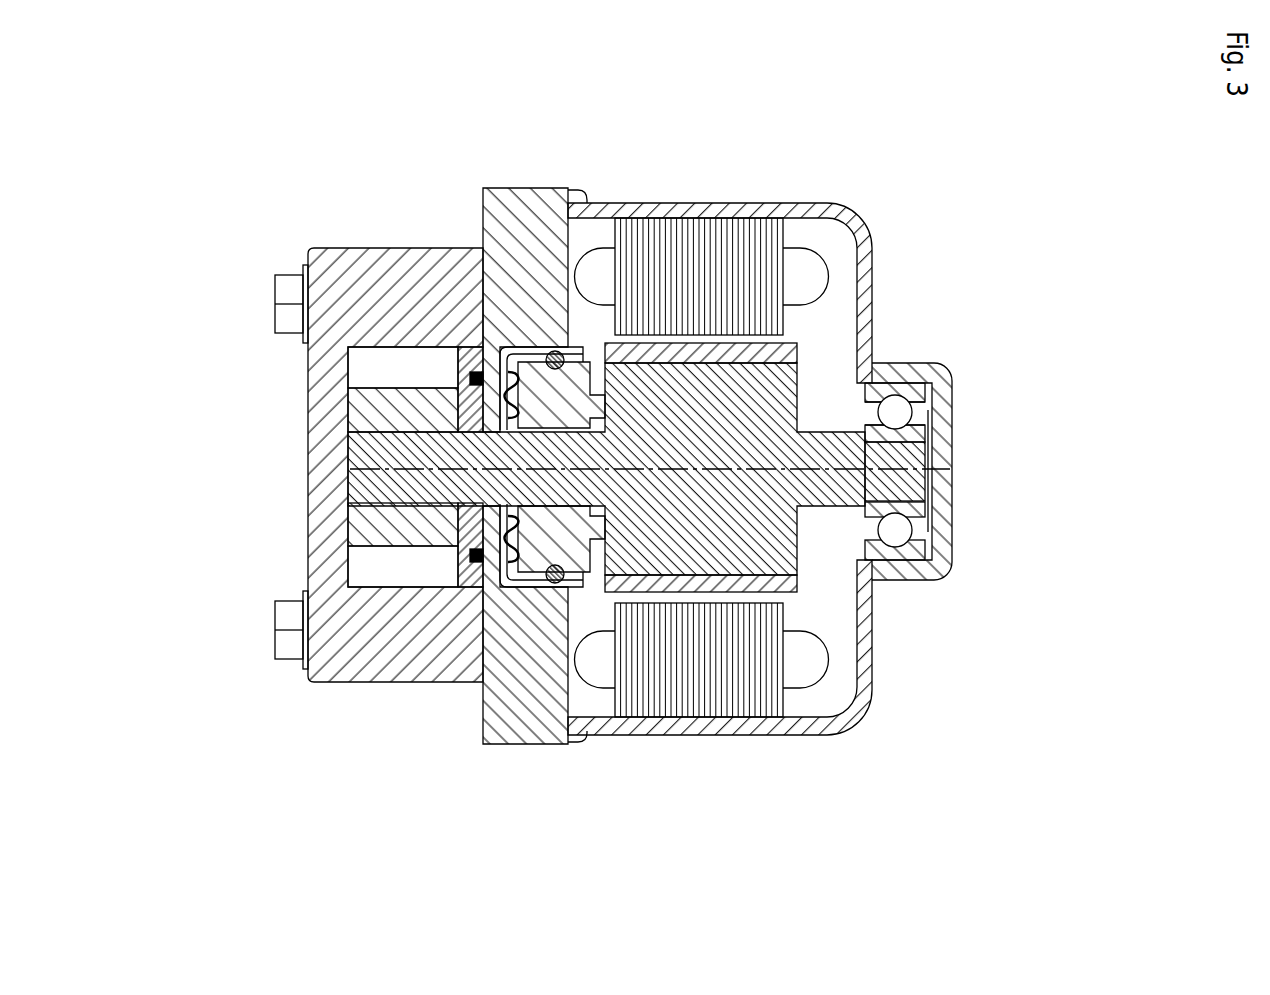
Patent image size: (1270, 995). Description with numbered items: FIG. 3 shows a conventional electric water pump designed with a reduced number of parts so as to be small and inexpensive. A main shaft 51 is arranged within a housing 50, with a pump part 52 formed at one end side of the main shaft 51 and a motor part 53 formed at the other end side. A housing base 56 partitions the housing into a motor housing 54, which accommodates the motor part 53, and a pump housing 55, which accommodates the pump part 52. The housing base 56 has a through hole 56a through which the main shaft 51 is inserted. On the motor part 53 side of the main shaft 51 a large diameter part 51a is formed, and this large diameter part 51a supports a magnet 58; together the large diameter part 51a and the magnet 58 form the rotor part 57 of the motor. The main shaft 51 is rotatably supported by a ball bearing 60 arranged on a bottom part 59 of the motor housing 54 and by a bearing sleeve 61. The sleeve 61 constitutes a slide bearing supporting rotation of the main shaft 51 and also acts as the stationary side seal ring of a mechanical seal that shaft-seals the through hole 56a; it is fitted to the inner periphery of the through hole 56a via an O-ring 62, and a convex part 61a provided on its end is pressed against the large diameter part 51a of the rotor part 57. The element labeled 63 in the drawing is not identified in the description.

The housing 50 is at (480, 237).
The main shaft 51 is at (360, 456).
The large diameter part 51a is at (788, 382).
The pump part 52 is at (361, 567).
The motor part 53 is at (823, 319).
The motor housing 54 is at (852, 214).
The pump housing 55 is at (335, 247).
The housing base 56 is at (538, 725).
The through hole 56a is at (480, 568).
The rotor part 57 is at (800, 558).
The magnet 58 is at (863, 660).
The bottom part 59 is at (951, 456).
The ball bearing 60 is at (938, 368).
The bearing sleeve 61 is at (527, 363).
The convex part 61a is at (625, 533).
The O-ring 62 is at (556, 352).
The spacer 63 is at (476, 340).